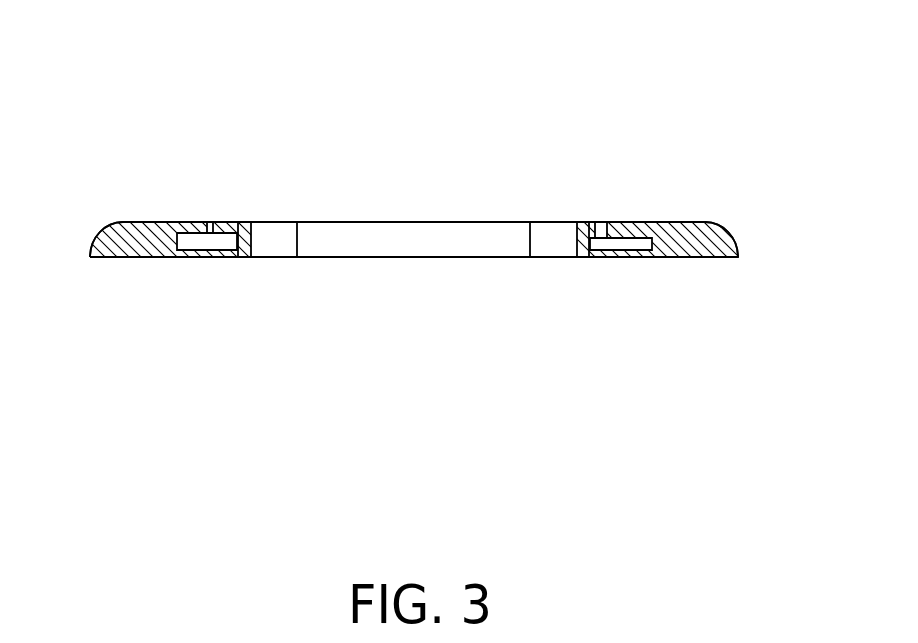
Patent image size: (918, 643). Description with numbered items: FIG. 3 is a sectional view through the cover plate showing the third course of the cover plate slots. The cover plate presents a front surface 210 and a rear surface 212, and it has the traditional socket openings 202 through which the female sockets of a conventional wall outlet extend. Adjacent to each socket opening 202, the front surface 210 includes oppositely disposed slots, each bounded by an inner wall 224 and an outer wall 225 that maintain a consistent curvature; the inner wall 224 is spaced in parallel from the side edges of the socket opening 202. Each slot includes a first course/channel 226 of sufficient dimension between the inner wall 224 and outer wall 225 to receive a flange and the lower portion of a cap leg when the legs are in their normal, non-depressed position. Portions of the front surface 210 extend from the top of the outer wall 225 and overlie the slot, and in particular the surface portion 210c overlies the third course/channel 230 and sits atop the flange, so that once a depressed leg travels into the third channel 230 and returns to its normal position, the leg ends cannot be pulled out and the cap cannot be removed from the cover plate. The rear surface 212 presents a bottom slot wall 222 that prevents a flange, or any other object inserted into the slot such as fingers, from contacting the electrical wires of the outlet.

The socket openings 202 is at (383, 243).
The front surface 210 is at (162, 222).
The cover plate surface portion 210c is at (193, 210).
The rear surface 212 is at (102, 258).
The bottom slot wall 222 is at (197, 250).
The inner wall 224 is at (248, 258).
The outer wall 225 is at (176, 246).
The first course/channel 226 is at (596, 232).
The third course/channel 230 is at (213, 243).